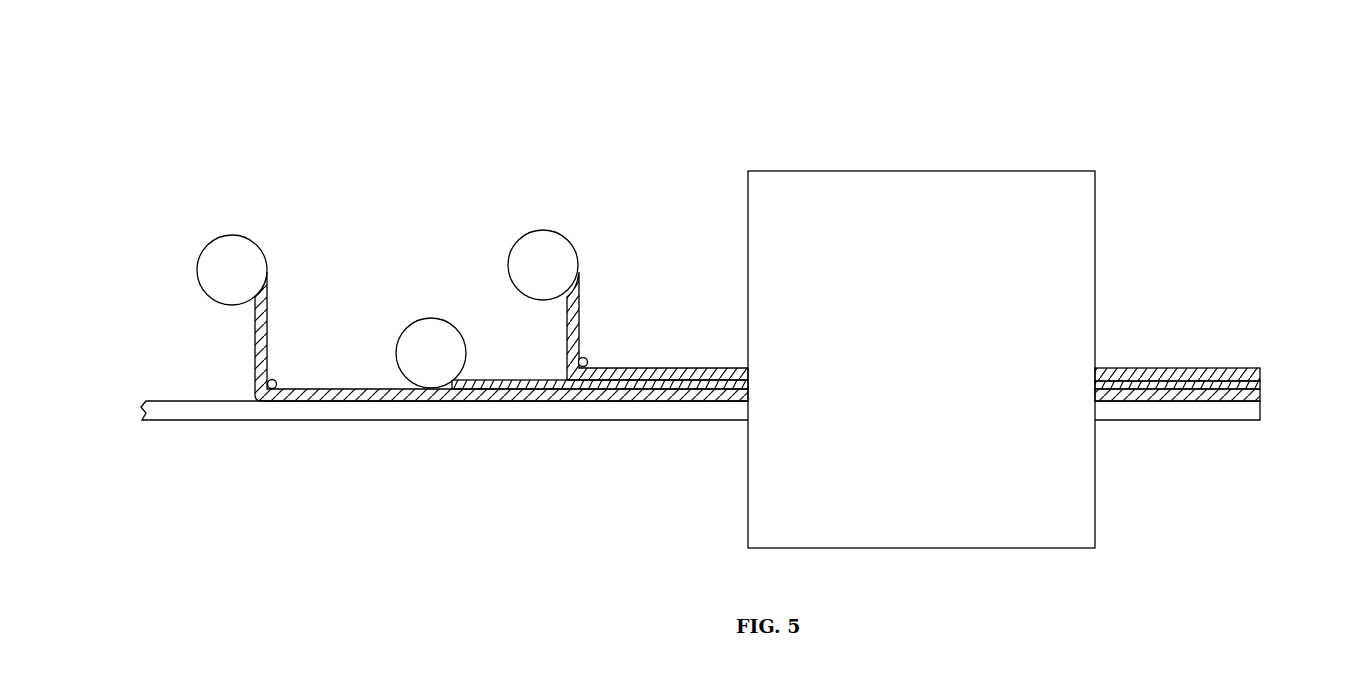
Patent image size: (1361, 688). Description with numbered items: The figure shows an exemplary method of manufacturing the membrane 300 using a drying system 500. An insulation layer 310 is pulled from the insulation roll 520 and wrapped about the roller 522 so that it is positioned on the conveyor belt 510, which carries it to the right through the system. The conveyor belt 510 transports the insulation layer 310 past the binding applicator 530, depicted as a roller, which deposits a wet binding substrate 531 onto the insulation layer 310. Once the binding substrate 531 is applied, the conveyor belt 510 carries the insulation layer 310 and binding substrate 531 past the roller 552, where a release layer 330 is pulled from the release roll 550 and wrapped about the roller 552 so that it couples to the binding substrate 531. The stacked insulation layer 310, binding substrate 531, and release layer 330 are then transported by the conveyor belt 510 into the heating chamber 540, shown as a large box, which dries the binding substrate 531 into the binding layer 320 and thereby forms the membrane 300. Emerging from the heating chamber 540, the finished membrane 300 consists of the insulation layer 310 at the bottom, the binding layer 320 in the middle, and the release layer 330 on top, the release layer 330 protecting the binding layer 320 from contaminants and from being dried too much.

The drying system 500 is at (576, 79).
The conveyor belt 510 is at (389, 410).
The insulation roll 520 is at (235, 245).
The roller 522 is at (275, 380).
The binding applicator 530 is at (430, 332).
The binding substrate 531 is at (507, 386).
The heating chamber 540 is at (921, 183).
The release roll 550 is at (545, 242).
The roller 552 is at (587, 360).
The membrane 300 is at (1202, 354).
The insulation layer 310 is at (335, 380).
The binding layer 320 is at (1276, 382).
The release layer 330 is at (659, 353).